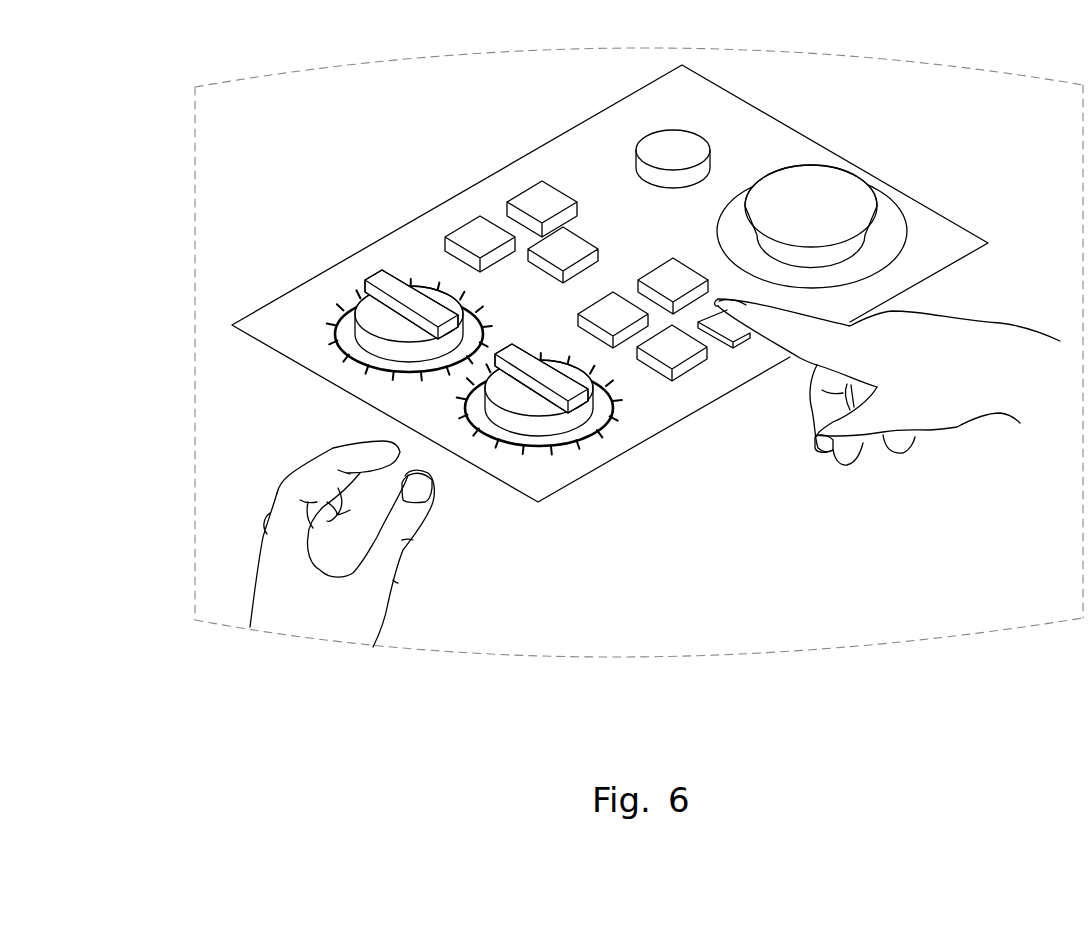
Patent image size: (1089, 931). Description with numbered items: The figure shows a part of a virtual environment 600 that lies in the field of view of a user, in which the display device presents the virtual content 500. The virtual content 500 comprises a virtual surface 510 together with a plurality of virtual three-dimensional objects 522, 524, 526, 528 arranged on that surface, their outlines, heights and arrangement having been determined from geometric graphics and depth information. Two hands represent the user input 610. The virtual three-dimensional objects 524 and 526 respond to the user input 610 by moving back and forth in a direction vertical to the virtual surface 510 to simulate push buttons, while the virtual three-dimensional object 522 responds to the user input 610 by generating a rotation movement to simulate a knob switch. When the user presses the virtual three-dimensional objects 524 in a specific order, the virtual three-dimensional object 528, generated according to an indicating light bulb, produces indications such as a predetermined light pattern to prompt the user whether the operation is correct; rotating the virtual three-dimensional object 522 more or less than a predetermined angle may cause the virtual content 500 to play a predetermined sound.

The virtual content 500 is at (610, 283).
The virtual surface 510 is at (798, 147).
The virtual 3D object 522 is at (500, 393).
The virtual 3D object 524 is at (666, 272).
The virtual 3D object 526 is at (857, 206).
The virtual 3D object 528 is at (650, 140).
The virtual environment 600 is at (195, 487).
The user input 610 is at (957, 331).